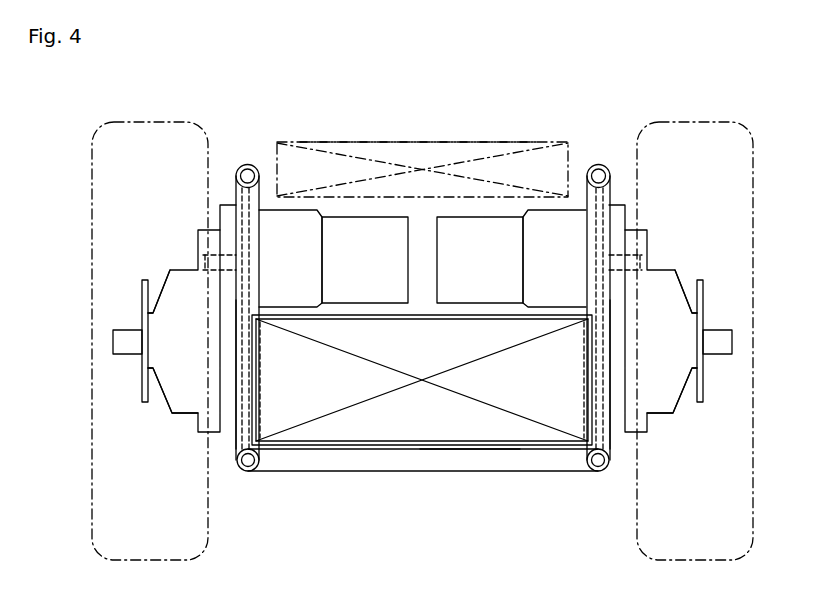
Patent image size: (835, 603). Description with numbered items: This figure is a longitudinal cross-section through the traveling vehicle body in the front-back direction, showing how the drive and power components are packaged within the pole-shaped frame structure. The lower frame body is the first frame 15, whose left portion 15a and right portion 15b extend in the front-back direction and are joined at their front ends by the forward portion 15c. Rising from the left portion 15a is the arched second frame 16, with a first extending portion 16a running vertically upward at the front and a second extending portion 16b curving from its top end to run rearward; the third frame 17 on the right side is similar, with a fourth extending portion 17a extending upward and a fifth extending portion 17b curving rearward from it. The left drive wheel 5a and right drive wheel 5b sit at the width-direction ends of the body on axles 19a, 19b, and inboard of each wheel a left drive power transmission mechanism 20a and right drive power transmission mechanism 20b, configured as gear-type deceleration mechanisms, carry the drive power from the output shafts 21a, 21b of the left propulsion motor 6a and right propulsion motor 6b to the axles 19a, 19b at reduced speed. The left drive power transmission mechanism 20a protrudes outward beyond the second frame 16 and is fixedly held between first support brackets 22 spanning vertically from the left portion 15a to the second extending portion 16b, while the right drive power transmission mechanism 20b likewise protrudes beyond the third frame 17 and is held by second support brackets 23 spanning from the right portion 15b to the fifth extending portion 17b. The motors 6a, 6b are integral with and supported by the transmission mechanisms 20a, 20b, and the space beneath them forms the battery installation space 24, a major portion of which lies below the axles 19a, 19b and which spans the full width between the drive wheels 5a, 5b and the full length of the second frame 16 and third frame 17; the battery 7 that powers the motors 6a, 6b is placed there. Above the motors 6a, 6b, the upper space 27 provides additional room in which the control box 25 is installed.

The left drive wheel 5a is at (92, 415).
The right drive wheel 5b is at (752, 410).
The left propulsion motor 6a is at (347, 280).
The right propulsion motor 6b is at (488, 280).
The battery 7 is at (422, 278).
The first frame 15 is at (424, 494).
The left portion 15a is at (243, 473).
The right portion 15b is at (600, 473).
The forward portion 15c is at (468, 473).
The second frame 16 is at (202, 280).
The first extending portion 16a is at (258, 295).
The second extending portion 16b is at (236, 176).
The third frame 17 is at (643, 278).
The fourth extending portion 17a is at (587, 295).
The fifth extending portion 17b is at (610, 176).
The axle 19a is at (122, 330).
The axle 19b is at (723, 330).
The left drive power transmission mechanism 20a is at (177, 397).
The right drive power transmission mechanism 20b is at (668, 397).
The output shaft 21a is at (192, 258).
The output shaft 21b is at (653, 258).
The first support bracket 22 is at (236, 395).
The second support bracket 23 is at (610, 395).
The battery installation space 24 is at (488, 418).
The control box 25 is at (392, 140).
The upper space 27 is at (360, 137).